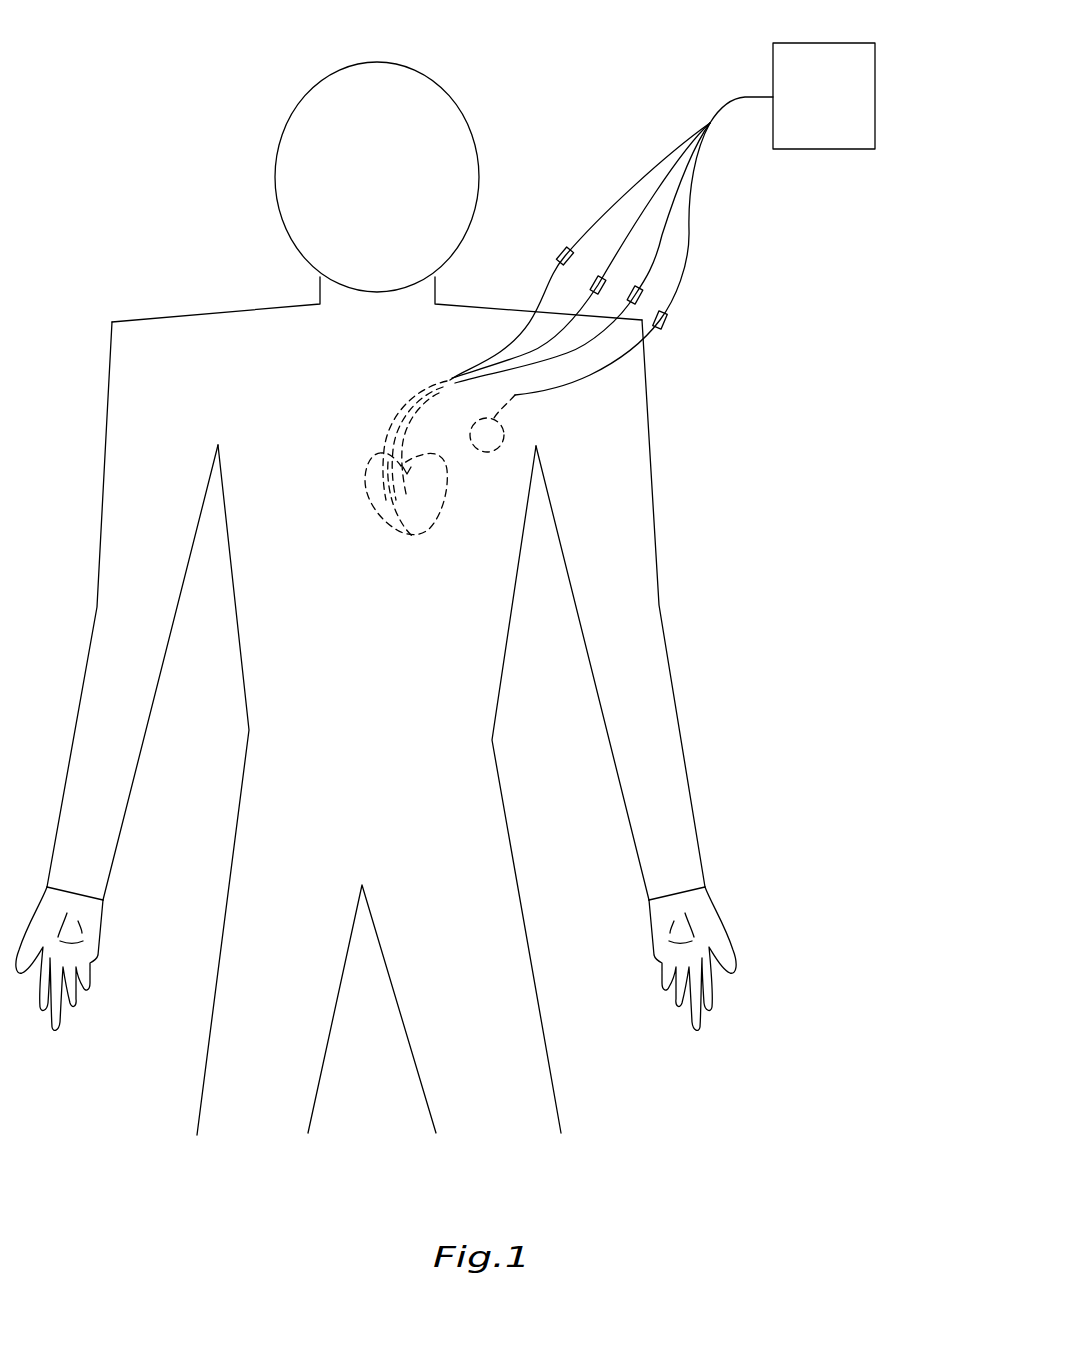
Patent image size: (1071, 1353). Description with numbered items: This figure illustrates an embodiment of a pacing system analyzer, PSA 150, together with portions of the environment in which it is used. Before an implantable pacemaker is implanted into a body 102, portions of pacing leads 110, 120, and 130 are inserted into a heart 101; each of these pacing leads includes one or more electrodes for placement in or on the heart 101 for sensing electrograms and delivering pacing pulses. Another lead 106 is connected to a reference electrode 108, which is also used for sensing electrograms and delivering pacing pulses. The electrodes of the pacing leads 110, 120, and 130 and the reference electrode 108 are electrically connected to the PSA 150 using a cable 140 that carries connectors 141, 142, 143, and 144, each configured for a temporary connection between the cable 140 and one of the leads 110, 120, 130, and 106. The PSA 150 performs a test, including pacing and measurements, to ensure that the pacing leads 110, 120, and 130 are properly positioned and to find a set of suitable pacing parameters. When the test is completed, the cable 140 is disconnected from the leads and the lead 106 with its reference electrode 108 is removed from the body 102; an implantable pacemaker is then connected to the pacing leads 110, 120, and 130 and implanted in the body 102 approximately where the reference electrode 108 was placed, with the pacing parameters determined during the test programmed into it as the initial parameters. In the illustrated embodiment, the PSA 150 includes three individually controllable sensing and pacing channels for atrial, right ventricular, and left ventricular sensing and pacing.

The heart 101 is at (380, 517).
The body 102 is at (247, 729).
The lead 106 is at (505, 402).
The reference electrode 108 is at (502, 427).
The pacing lead 110 is at (390, 417).
The pacing lead 120 is at (405, 400).
The pacing lead 130 is at (428, 397).
The cable 140 is at (745, 95).
The connector 141 is at (560, 254).
The connector 142 is at (565, 250).
The connector 143 is at (645, 292).
The connector 144 is at (662, 325).
The PSA 150 is at (876, 62).